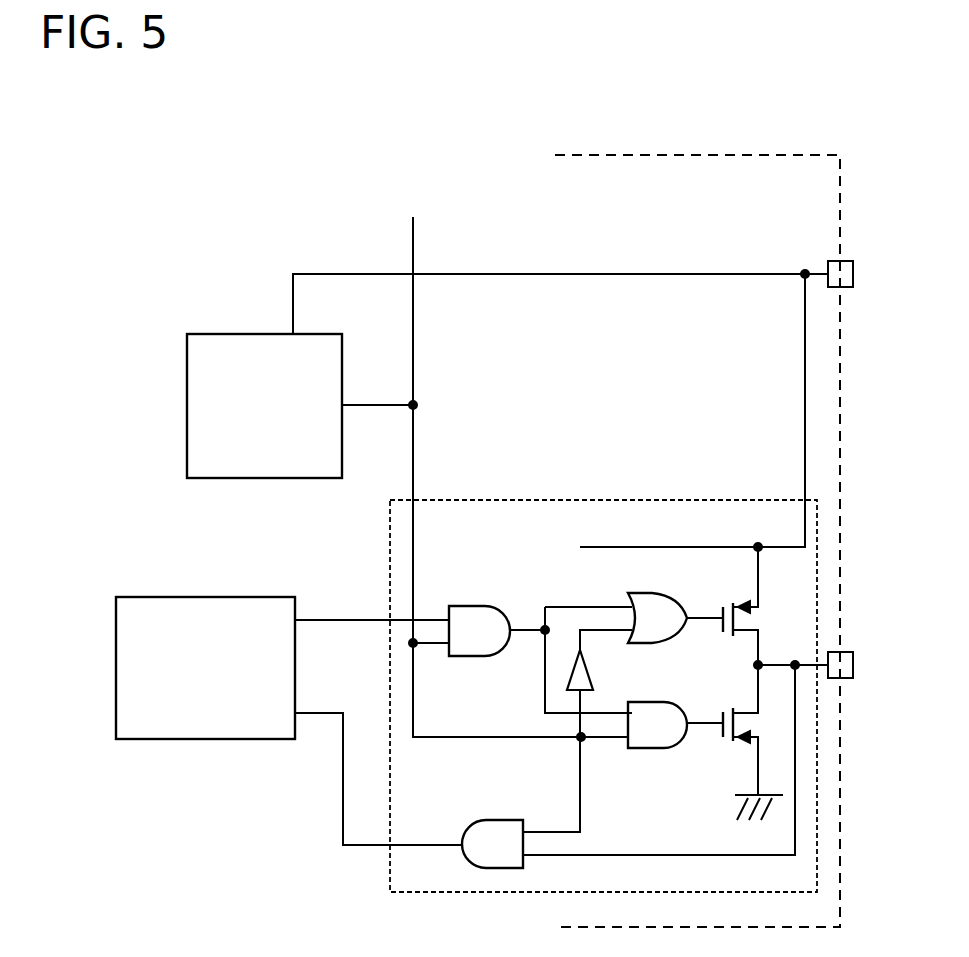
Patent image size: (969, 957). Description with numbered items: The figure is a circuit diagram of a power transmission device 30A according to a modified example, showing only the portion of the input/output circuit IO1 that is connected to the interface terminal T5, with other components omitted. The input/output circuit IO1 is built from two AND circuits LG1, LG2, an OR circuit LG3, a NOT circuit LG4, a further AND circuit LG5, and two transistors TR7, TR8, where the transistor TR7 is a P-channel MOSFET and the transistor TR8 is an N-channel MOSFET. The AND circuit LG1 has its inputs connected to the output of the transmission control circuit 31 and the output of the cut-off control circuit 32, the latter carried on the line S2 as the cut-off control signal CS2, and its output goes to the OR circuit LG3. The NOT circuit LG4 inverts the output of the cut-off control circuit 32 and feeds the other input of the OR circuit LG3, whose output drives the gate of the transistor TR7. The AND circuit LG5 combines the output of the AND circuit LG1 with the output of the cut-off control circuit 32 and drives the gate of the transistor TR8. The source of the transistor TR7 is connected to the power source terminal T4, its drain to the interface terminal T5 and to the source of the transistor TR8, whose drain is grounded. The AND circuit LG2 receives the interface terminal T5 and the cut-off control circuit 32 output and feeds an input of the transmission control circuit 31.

The power transmission device 30A is at (193, 176).
The cut-off control circuit 32 is at (243, 334).
The transmission control circuit 31 is at (173, 597).
The signal line S2 is at (513, 465).
The cut-off control signal CS2 is at (379, 392).
The power source terminal T4 is at (584, 391).
The interface terminal T5 is at (702, 740).
The input/output circuit IO1 is at (644, 500).
The AND circuit LG1 is at (463, 648).
The AND circuit LG2 is at (409, 790).
The OR circuit LG3 is at (651, 609).
The NOT circuit LG4 is at (566, 679).
The AND circuit LG5 is at (671, 711).
The transistor TR7 is at (731, 606).
The transistor TR8 is at (743, 742).